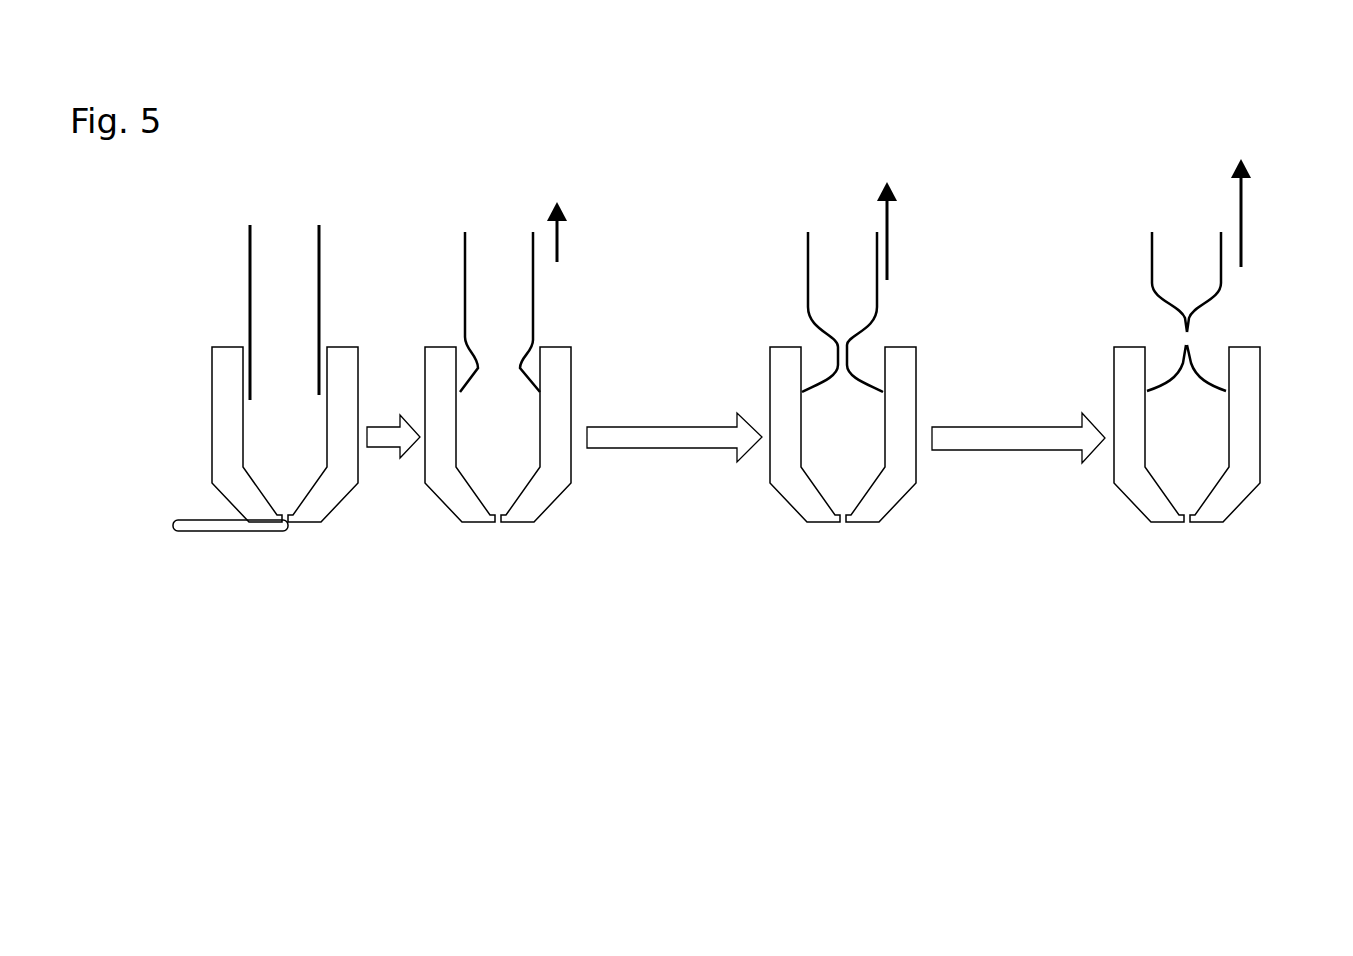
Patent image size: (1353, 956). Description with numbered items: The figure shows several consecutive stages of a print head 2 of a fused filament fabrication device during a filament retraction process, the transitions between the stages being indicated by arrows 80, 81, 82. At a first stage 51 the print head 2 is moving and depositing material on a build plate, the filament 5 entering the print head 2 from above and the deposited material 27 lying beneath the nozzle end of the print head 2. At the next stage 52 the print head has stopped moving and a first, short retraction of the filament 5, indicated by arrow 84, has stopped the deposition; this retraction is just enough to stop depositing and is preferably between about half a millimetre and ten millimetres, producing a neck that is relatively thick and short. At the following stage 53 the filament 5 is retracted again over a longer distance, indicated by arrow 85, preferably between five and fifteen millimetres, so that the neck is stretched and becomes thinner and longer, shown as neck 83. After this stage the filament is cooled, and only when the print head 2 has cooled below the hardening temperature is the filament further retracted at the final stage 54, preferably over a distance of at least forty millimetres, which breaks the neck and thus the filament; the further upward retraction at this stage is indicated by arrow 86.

The print head 2 is at (214, 393).
The filament 5 is at (255, 263).
The deposited material 27 is at (216, 524).
The stage 51 is at (258, 430).
The stage 52 is at (489, 635).
The stage 53 is at (862, 434).
The stage 54 is at (1189, 635).
The arrow 80 is at (376, 430).
The arrow 81 is at (673, 428).
The arrow 82 is at (1018, 428).
The neck 83 is at (863, 341).
The arrow 84 is at (557, 237).
The arrow 85 is at (887, 237).
The upward movement arrow 86 is at (1241, 213).